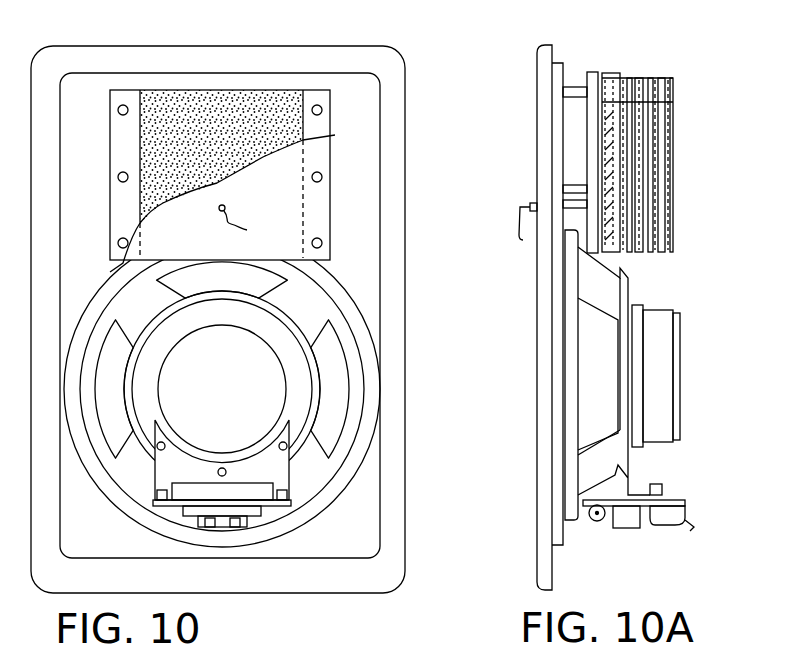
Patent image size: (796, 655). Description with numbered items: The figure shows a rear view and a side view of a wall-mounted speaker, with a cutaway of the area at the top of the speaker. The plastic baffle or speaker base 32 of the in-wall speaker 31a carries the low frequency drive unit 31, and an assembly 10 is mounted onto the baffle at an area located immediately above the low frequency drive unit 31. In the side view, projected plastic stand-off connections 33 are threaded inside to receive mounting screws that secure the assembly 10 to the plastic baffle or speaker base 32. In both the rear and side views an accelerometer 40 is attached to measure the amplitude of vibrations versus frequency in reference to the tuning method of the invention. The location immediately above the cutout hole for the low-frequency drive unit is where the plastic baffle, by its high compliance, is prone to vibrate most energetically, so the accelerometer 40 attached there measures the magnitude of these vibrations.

In FIG. 10, the acoustic panel 10 is at (237, 81).
In FIG. 10A, the acoustic panel 10 is at (685, 107).
In FIG. 10, the low frequency drive unit 31 is at (360, 315).
In FIG. 10, the in-wall speaker 31a is at (352, 278).
In FIG. 10A, the in-wall speaker 31a is at (672, 278).
In FIG. 10, the plastic baffle or speaker base 32 is at (362, 100).
In FIG. 10A, the plastic baffle or speaker base 32 is at (538, 452).
In FIG. 10A, the plastic stand-off connections 33 is at (575, 88).
In FIG. 10, the accelerometer 40 is at (224, 206).
In FIG. 10A, the accelerometer 40 is at (533, 205).